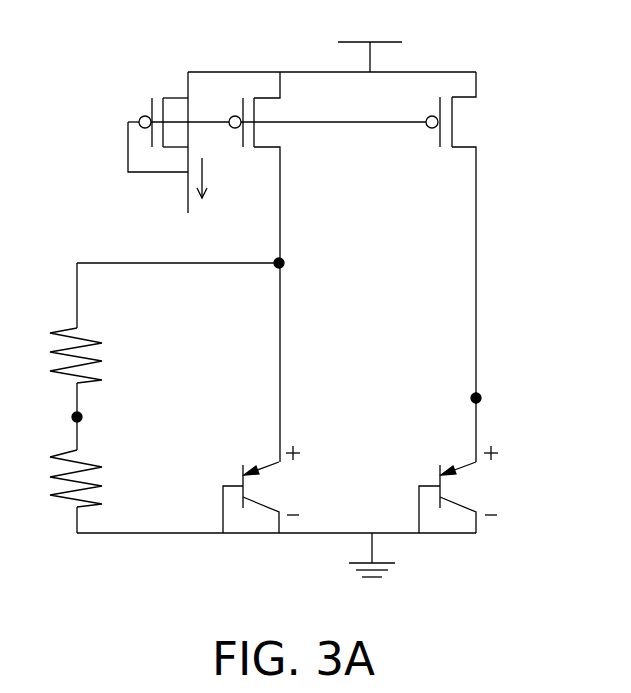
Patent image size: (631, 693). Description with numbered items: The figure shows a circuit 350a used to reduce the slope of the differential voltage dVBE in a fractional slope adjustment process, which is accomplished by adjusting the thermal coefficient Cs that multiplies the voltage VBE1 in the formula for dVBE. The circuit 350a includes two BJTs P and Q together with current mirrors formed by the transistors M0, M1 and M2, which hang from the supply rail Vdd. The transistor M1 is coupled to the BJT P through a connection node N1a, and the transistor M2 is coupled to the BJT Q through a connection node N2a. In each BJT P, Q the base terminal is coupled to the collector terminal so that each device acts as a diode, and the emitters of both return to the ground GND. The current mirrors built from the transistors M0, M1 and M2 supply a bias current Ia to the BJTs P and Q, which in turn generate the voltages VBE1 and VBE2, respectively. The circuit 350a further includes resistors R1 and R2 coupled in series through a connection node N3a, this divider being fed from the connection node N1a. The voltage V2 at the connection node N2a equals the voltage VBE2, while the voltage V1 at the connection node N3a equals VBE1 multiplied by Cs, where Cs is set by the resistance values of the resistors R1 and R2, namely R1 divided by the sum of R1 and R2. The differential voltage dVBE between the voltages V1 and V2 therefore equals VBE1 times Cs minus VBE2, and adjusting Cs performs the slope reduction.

The circuit 350a is at (593, 612).
The supply voltage Vdd is at (370, 42).
The transistor M0 is at (151, 142).
The transistor M1 is at (274, 267).
The transistor M2 is at (465, 267).
The bias current Ia is at (212, 178).
The connection node N1a is at (304, 264).
The connection node N2a is at (451, 399).
The connection node N3a is at (53, 418).
The voltage V1 is at (97, 418).
The voltage V2 is at (495, 399).
The resistor R1 is at (58, 337).
The resistor R2 is at (57, 477).
The BJT P is at (249, 491).
The BJT Q is at (443, 491).
The voltage VBE1 is at (296, 480).
The voltage VBE2 is at (494, 480).
The ground GND is at (372, 573).